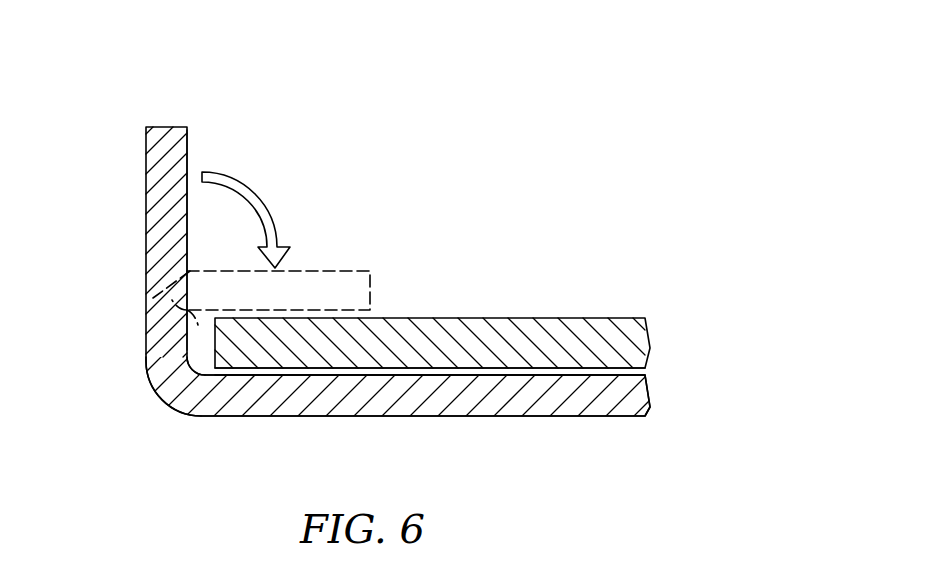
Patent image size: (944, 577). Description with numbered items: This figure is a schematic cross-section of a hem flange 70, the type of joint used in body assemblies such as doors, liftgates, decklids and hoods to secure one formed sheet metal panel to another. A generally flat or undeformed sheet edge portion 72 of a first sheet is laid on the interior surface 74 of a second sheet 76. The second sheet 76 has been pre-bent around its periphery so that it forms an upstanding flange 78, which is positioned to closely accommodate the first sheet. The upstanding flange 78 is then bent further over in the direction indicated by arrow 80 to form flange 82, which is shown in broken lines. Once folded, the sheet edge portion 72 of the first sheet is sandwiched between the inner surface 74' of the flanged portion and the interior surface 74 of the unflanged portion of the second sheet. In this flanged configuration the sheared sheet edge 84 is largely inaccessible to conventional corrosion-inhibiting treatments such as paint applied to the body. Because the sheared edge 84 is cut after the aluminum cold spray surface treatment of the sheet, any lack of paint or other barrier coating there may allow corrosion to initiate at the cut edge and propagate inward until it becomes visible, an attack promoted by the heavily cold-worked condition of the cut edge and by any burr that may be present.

The hem flange 70 is at (513, 215).
The sheet edge portion 72 is at (540, 345).
The interior surface 74 is at (441, 325).
The inner surface 74' is at (258, 240).
The second sheet 76 is at (633, 393).
The upstanding flange 78 is at (146, 165).
The arrow 80 is at (218, 176).
The flange 82 is at (378, 287).
The sheet edge 84 is at (215, 343).